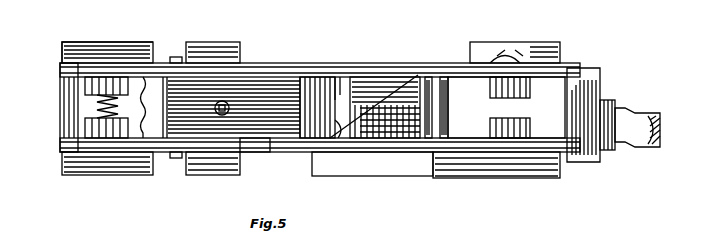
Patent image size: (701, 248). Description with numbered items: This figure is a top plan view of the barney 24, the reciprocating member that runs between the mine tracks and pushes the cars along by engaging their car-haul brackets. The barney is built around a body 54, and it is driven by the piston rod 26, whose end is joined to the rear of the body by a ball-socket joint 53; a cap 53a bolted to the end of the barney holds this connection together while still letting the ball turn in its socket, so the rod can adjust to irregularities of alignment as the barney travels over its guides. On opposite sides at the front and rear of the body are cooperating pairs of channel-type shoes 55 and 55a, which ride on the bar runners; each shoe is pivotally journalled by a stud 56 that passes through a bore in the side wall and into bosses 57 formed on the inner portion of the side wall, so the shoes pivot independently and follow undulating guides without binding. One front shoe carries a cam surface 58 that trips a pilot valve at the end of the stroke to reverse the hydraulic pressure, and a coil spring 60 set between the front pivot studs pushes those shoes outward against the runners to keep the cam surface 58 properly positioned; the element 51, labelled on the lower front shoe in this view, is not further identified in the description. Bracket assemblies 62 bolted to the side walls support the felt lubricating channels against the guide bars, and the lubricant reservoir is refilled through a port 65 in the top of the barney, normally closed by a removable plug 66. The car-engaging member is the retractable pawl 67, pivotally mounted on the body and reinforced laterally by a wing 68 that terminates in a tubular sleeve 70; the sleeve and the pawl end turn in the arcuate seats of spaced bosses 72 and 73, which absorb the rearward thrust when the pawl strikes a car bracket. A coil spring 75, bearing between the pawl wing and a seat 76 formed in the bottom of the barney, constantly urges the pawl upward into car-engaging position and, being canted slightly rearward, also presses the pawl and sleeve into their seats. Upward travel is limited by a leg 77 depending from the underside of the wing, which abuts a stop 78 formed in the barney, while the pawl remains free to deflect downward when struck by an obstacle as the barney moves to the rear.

The barney 24 is at (265, 65).
The piston rod 26 is at (648, 122).
The lower clamp block 51 is at (128, 165).
The ball-socket joint 53 is at (592, 155).
The cap 53a is at (606, 112).
The body 54 is at (296, 70).
The channel-type shoes 55 is at (140, 48).
The channel-type shoes 55a is at (540, 48).
The stud 56 is at (508, 55).
The bosses 57 is at (492, 92).
The cam surface 58 is at (70, 50).
The coil spring 60 is at (95, 108).
The bracket assemblies 62 is at (200, 52).
The port 65 is at (270, 155).
The removable plug 66 is at (216, 111).
The retractable pawl 67 is at (400, 168).
The wing 68 is at (405, 70).
The tubular sleeve 70 is at (440, 108).
The boss 72 is at (462, 66).
The boss 73 is at (466, 168).
The coil spring 75 is at (360, 100).
The seat 76 is at (355, 95).
The leg 77 is at (334, 146).
The stop 78 is at (320, 80).